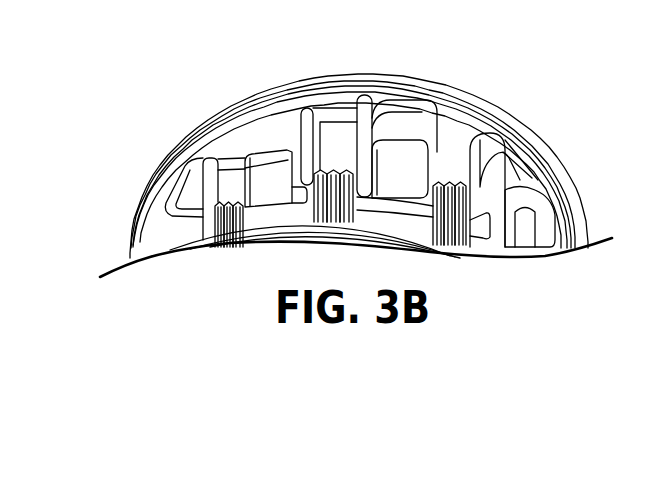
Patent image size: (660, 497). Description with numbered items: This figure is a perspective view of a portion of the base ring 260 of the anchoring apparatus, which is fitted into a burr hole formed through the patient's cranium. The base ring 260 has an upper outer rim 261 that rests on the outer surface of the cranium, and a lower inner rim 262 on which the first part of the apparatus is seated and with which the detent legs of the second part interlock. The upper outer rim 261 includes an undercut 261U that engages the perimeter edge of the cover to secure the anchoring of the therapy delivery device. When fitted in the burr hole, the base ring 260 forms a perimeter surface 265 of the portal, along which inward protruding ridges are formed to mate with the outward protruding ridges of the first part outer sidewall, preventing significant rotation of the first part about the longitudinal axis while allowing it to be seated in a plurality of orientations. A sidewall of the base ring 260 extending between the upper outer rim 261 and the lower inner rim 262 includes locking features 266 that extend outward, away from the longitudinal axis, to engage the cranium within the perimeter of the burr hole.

The base ring 260 is at (124, 78).
The upper outer rim 261 is at (136, 218).
The undercut 261U is at (166, 152).
The lower inner rim 262 is at (290, 230).
The perimeter surface 265 is at (427, 192).
The locking features 266 is at (513, 185).